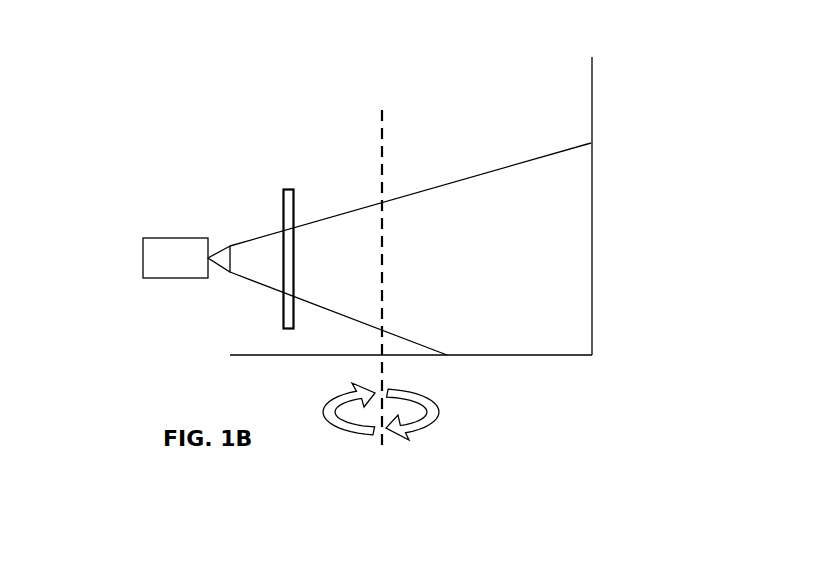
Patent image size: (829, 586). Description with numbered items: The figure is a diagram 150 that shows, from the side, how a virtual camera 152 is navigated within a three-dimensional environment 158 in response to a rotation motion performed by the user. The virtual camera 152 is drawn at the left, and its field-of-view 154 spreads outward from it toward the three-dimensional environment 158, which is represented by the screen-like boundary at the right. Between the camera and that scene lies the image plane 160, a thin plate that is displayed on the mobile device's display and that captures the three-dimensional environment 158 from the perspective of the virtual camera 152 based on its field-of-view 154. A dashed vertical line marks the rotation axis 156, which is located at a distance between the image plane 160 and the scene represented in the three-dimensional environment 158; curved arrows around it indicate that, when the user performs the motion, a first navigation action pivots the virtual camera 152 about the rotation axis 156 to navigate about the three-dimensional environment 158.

The diagram 150 is at (576, 420).
The virtual camera 152 is at (143, 258).
The field-of-view 154 is at (495, 167).
The rotation axis 156 is at (380, 462).
The three-dimensional environment 158 is at (594, 242).
The image plane 160 is at (290, 189).